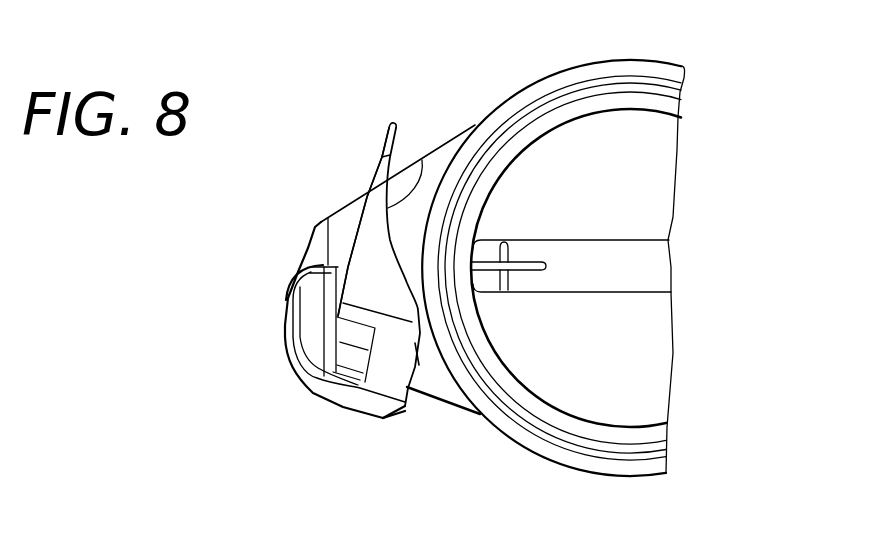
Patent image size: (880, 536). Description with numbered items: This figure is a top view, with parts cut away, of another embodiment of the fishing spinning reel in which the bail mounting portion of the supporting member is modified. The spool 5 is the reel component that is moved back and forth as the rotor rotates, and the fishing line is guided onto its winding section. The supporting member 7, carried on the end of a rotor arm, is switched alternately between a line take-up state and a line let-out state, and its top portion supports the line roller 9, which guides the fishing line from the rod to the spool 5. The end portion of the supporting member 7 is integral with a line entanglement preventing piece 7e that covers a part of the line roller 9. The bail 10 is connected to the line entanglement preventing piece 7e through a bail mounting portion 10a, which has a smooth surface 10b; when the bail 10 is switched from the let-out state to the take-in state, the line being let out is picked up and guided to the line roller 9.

The spool 5 is at (658, 465).
The supporting member 7 is at (308, 322).
The line entanglement preventing piece 7e is at (398, 358).
The line roller 9 is at (355, 358).
The bail 10 is at (388, 126).
The bail mounting portion 10a is at (366, 236).
The smooth surface 10b is at (426, 195).